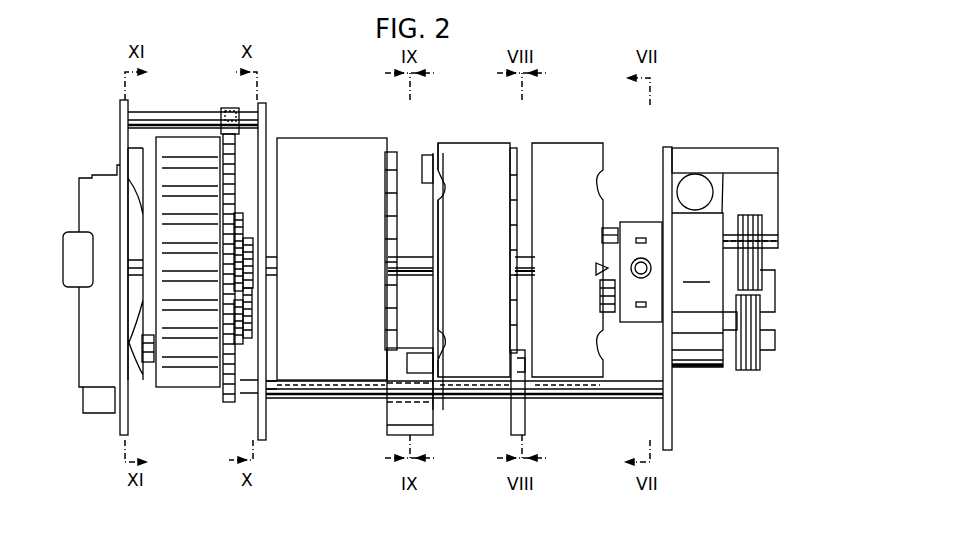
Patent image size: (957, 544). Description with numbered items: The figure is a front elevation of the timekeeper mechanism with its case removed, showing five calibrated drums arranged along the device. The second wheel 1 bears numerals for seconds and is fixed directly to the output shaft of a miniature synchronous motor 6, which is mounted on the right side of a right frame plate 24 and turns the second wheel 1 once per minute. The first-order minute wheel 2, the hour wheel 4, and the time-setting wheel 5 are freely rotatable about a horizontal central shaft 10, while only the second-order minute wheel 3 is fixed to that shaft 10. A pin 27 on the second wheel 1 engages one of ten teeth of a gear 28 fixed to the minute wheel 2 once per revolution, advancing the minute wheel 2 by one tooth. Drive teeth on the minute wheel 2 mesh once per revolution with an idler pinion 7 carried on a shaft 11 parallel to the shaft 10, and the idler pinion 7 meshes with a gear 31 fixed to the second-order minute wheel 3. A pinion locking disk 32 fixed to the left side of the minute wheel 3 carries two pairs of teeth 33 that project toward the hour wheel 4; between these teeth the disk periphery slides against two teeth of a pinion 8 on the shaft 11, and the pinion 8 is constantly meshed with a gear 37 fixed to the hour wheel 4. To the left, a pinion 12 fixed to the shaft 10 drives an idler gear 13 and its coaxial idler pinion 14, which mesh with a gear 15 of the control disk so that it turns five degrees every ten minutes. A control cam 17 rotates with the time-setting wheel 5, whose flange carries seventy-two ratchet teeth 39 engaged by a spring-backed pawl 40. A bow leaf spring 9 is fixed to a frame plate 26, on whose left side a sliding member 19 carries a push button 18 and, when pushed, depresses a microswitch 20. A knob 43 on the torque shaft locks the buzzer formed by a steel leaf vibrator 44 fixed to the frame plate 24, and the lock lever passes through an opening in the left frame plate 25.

The second wheel 1 is at (655, 322).
The first-order minute wheel 2 is at (588, 375).
The second-order minute wheel 3 is at (483, 375).
The hour wheel 4 is at (370, 375).
The time-setting wheel 5 is at (207, 386).
The miniature synchronous motor 6 is at (720, 368).
The idler pinion 7 is at (525, 422).
The pinion 8 is at (425, 412).
The bow leaf spring 9 is at (140, 350).
The central shaft 10 is at (410, 257).
The shaft 11 is at (295, 397).
The pinion 12 is at (253, 250).
The idler gear 13 is at (252, 320).
The idler pinion 14 is at (240, 344).
The gear 15 is at (241, 213).
The control cam 17 is at (148, 362).
The push button 18 is at (68, 242).
The sliding member 19 is at (79, 364).
The microswitch 20 is at (99, 412).
The right frame plate 24 is at (663, 163).
The left frame plate 25 is at (262, 420).
The frame plate 26 is at (120, 121).
The pin 27 is at (613, 228).
The gear 28 is at (606, 268).
The gear 31 is at (513, 158).
The pinion locking disk 32 is at (438, 162).
The teeth 33 is at (425, 155).
The gear 37 is at (388, 152).
The ratchet teeth 39 is at (229, 408).
The pawl 40 is at (223, 108).
The knob 43 is at (693, 185).
The steel leaf vibrator 44 is at (745, 185).